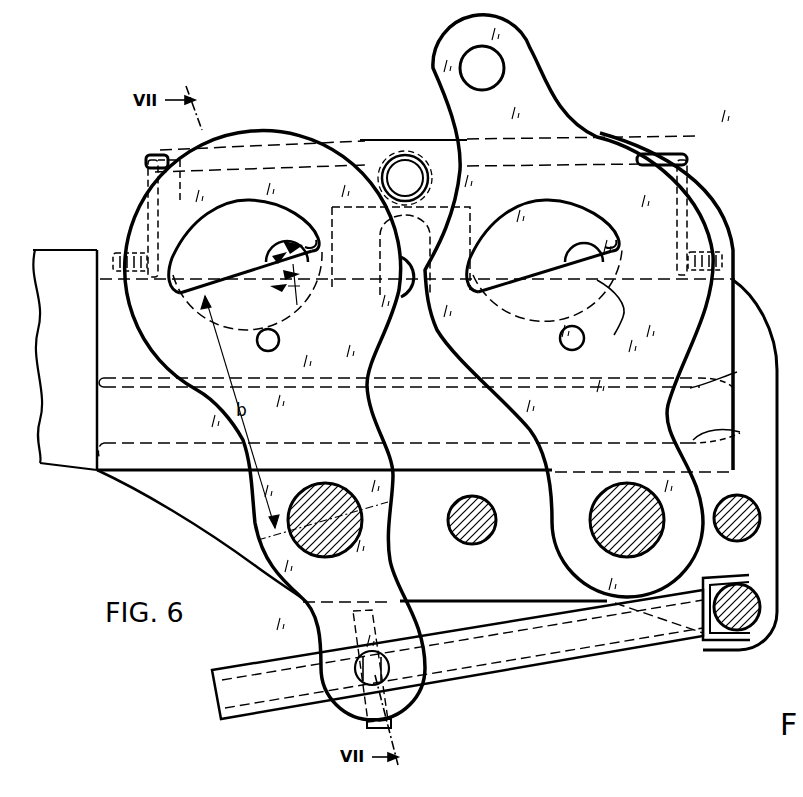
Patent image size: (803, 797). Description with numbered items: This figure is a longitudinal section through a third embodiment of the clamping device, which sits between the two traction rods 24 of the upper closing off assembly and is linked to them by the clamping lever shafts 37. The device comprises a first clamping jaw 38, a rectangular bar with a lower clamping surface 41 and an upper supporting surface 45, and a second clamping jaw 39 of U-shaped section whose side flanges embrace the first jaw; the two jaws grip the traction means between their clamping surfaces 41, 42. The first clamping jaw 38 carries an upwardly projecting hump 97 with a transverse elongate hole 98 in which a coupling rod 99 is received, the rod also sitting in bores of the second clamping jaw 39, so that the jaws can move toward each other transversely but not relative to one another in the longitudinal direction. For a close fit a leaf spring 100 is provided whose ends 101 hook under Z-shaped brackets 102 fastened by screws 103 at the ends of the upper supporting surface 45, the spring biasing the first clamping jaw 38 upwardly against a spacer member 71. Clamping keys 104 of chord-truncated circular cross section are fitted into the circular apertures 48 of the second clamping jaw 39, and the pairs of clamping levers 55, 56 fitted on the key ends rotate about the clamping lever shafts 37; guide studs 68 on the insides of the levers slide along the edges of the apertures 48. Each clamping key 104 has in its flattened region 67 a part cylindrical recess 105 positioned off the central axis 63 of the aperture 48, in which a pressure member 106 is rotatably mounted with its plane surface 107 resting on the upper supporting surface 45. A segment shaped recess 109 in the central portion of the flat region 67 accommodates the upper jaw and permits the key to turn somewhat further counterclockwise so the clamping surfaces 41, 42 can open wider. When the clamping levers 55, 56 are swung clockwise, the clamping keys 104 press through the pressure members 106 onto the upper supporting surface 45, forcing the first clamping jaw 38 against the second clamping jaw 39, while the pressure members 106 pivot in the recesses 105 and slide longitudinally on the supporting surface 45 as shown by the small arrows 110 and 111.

The traction rod 24 is at (58, 258).
The clamping lever shaft 37 is at (330, 556).
The first clamping jaw 38 is at (112, 317).
The second clamping jaw 39 is at (725, 313).
The clamping surface 41 is at (740, 385).
The clamping surface 42 is at (735, 435).
The upper supporting surface 45 is at (657, 277).
The aperture 48 is at (322, 310).
The clamping lever 55 is at (670, 190).
The clamping lever 56 is at (147, 330).
The central axis of aperture 63 is at (252, 280).
The flattened region 67 is at (520, 282).
The guide stud 68 is at (261, 333).
The spacer member 71 is at (393, 168).
The hump 97 is at (470, 213).
The elongate hole 98 is at (405, 225).
The coupling rod 99 is at (413, 300).
The leaf spring 100 is at (418, 150).
The spring end 101 is at (648, 112).
The Z-shaped bracket 102 is at (146, 162).
The screw 103 is at (117, 255).
The clamping key 104 is at (250, 210).
The part cylindrical recess 105 is at (585, 245).
The pressure member 106 is at (328, 260).
The plane surface 107 is at (600, 287).
The segment shaped recess 109 is at (194, 288).
The arrow 110 is at (285, 250).
The arrow 111 is at (294, 300).